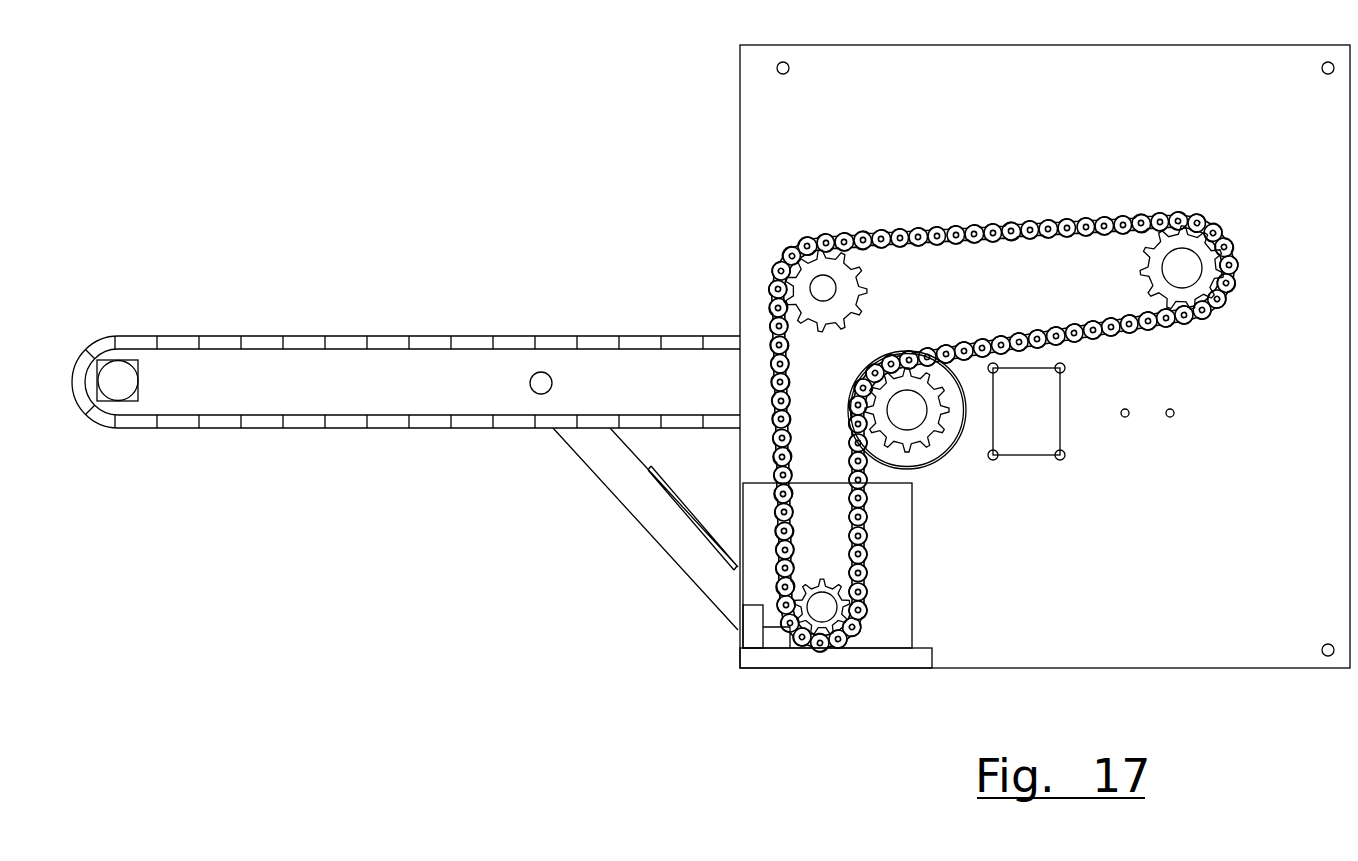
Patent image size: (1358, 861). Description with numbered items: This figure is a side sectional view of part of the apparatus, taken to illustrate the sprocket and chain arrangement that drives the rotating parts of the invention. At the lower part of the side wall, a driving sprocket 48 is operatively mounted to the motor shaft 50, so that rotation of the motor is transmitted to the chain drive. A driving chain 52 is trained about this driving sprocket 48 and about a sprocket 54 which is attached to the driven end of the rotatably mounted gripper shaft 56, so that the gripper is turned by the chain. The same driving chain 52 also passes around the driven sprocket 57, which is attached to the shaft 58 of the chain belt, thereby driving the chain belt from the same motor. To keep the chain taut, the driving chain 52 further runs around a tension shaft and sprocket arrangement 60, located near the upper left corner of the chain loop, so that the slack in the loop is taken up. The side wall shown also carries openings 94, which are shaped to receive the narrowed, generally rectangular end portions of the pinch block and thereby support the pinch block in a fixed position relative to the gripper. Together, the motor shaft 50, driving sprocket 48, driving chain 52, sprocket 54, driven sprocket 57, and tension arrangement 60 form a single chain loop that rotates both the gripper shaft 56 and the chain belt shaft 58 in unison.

The driving chain 52 is at (947, 228).
The tension shaft and sprocket arrangement 60 is at (863, 302).
The driven sprocket 57 is at (1193, 222).
The shaft 58 is at (1187, 275).
The sprocket 54 is at (918, 465).
The gripper shaft 56 is at (917, 412).
The openings 94 is at (1063, 397).
The driving sprocket 48 is at (830, 576).
The motor shaft 50 is at (827, 612).